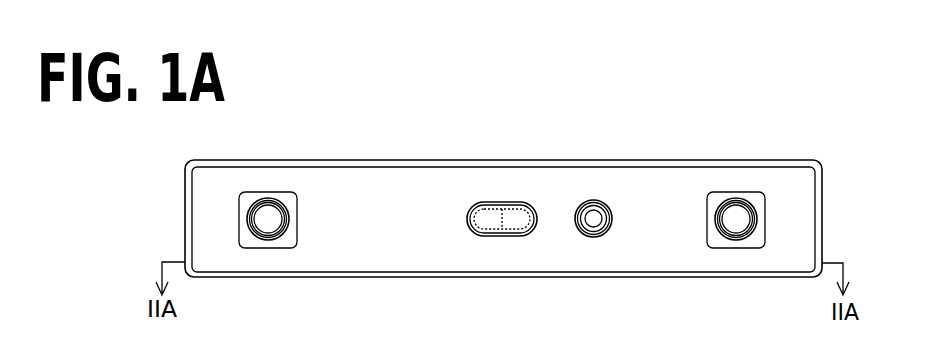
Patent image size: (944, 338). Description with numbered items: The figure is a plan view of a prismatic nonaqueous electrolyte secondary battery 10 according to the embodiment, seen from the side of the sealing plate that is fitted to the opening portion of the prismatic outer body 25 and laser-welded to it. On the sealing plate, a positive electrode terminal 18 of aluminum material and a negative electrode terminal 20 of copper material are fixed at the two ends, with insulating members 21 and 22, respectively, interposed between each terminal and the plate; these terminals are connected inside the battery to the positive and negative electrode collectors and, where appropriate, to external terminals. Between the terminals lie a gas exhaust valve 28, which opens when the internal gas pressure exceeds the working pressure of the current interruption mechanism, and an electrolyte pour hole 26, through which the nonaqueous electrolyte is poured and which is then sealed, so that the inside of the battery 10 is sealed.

The prismatic nonaqueous electrolyte secondary battery 10 is at (145, 145).
The positive electrode terminal 18 is at (735, 216).
The negative electrode terminal 20 is at (266, 216).
The insulating member 21 is at (757, 244).
The insulating member 22 is at (288, 244).
The prismatic outer body 25 is at (488, 275).
The electrolyte pour hole 26 is at (593, 226).
The gas exhaust valve 28 is at (516, 215).